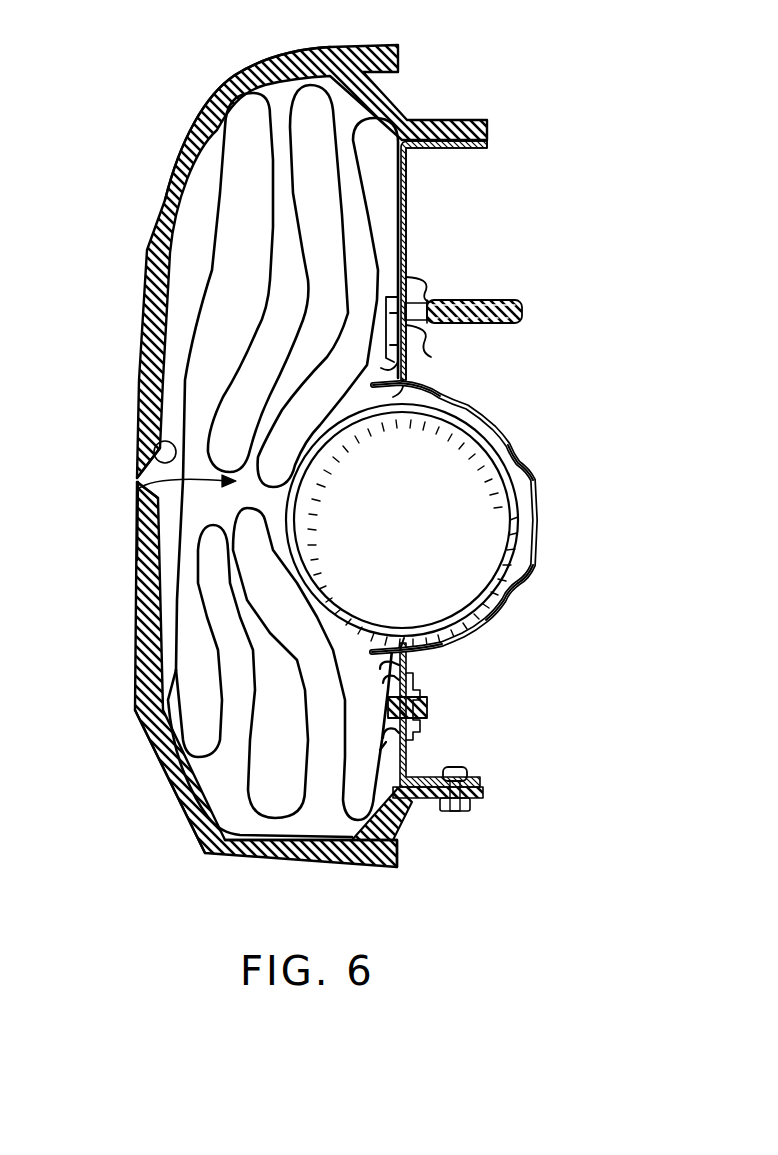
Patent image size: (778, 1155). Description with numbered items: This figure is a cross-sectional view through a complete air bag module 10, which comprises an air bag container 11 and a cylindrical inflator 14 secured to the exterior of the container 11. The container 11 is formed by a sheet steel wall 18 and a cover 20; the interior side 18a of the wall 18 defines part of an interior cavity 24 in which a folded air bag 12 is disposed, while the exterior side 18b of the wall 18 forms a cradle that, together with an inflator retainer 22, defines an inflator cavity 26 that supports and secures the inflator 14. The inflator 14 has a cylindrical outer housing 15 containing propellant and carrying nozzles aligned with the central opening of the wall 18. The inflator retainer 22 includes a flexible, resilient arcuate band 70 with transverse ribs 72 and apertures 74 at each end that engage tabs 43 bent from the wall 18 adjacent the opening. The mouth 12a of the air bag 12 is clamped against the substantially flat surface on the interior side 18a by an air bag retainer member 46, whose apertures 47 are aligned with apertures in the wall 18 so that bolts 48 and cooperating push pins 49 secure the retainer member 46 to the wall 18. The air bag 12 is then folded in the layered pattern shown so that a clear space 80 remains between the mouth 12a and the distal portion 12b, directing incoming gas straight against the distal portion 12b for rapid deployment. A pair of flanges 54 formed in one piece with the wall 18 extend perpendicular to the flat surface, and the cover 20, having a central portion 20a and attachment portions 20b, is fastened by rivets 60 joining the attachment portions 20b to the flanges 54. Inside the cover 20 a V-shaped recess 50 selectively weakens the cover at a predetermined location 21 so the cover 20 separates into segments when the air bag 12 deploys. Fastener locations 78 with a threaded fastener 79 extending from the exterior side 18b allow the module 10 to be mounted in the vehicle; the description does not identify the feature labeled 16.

The air bag module 10 is at (488, 53).
The air bag container 11 is at (359, 41).
The air bag 12 is at (366, 112).
The mouth of the air bag 12a is at (404, 690).
The distal portion of the air bag 12b is at (145, 536).
The cylindrical inflator 14 is at (522, 511).
The outer housing of the inflator 15 is at (532, 492).
The mounting bracket assembly 16 is at (462, 193).
The wall 18 is at (408, 235).
The interior side of the wall 18a is at (415, 778).
The exterior side of the wall 18b is at (407, 370).
The cover 20 is at (141, 733).
The central portion of the cover 20a is at (190, 814).
The attachment portions of the cover 20b is at (395, 870).
The predetermined location 21 is at (137, 480).
The inflator retainer 22 is at (542, 560).
The interior cavity 24 is at (170, 573).
The inflator cavity 26 is at (475, 423).
The tabs 43 is at (420, 653).
The air bag retainer member 46 is at (416, 268).
The apertures of the retainer member 47 is at (388, 686).
The bolts 48 is at (388, 708).
The push pins 49 is at (425, 736).
The V-shaped recess 50 is at (160, 443).
The flanges 54 is at (470, 150).
The rivets 60 is at (460, 812).
The arcuate band 70 is at (543, 528).
The transverse ribs 72 is at (517, 457).
The apertures of the band 74 is at (420, 395).
The fastener locations 78 is at (483, 337).
The threaded fastener 79 is at (512, 302).
The clear space 80 is at (137, 490).